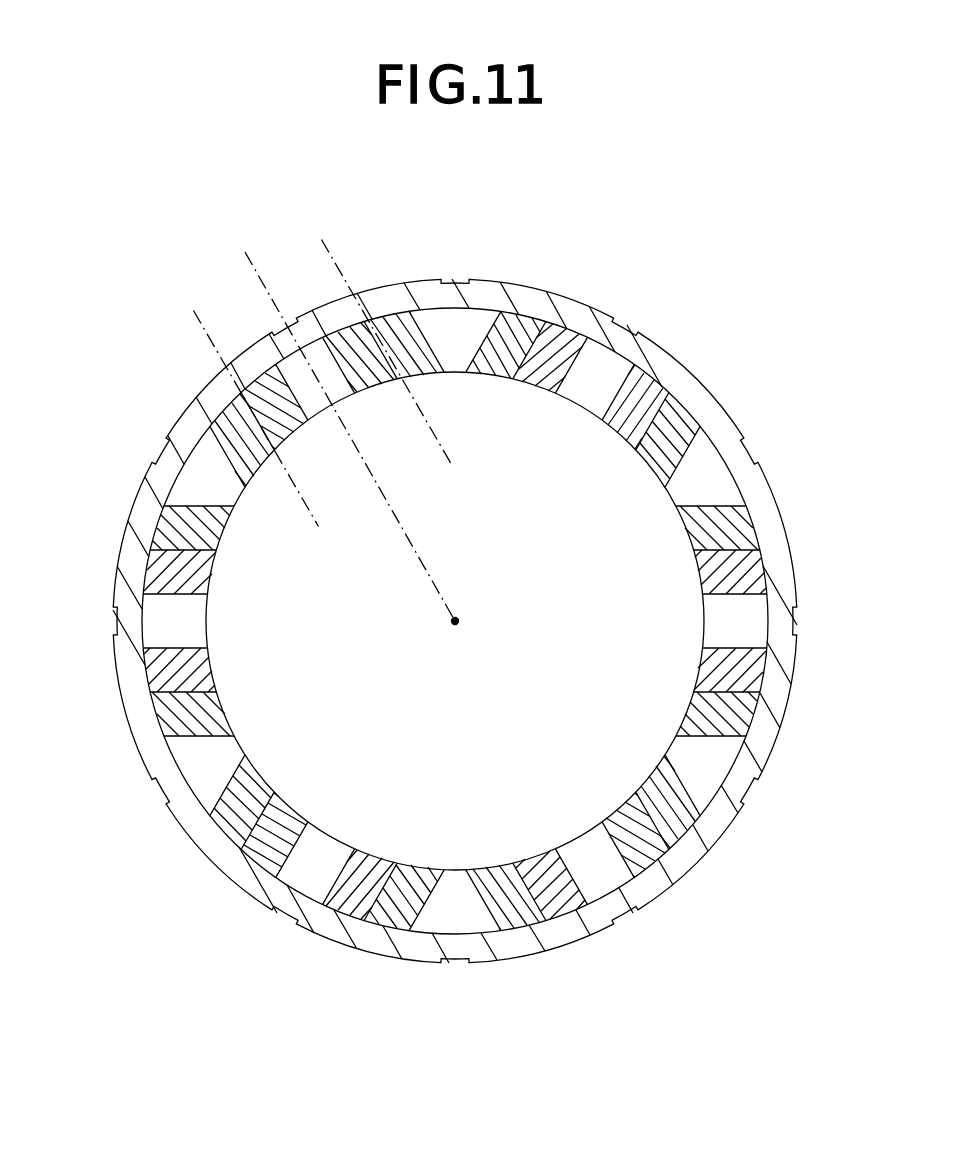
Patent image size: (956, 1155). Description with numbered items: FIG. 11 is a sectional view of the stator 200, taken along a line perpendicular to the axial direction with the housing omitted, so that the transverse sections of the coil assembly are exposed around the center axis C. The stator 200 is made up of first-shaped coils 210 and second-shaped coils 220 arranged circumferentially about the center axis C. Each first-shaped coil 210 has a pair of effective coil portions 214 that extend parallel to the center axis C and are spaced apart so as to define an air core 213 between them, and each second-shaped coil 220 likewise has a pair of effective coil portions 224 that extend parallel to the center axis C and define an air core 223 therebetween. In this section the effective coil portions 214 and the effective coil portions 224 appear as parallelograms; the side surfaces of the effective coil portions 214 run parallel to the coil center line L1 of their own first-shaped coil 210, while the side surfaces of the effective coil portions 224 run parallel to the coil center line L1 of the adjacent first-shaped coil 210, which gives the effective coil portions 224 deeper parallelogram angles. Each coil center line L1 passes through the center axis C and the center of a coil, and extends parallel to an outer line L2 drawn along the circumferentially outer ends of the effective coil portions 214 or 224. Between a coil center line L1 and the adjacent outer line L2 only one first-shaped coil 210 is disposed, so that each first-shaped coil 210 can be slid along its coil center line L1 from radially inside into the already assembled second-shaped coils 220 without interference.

The stator 200 is at (704, 206).
The first-shaped coil 210 is at (343, 406).
The air core 213 is at (316, 398).
The effective coil portion 214 is at (282, 426).
The second-shaped coil 220 is at (457, 300).
The air core 223 is at (466, 338).
The effective coil portion 224 is at (395, 330).
The coil center line L1 is at (261, 278).
The outer line L2 is at (322, 246).
The center axis C is at (467, 625).